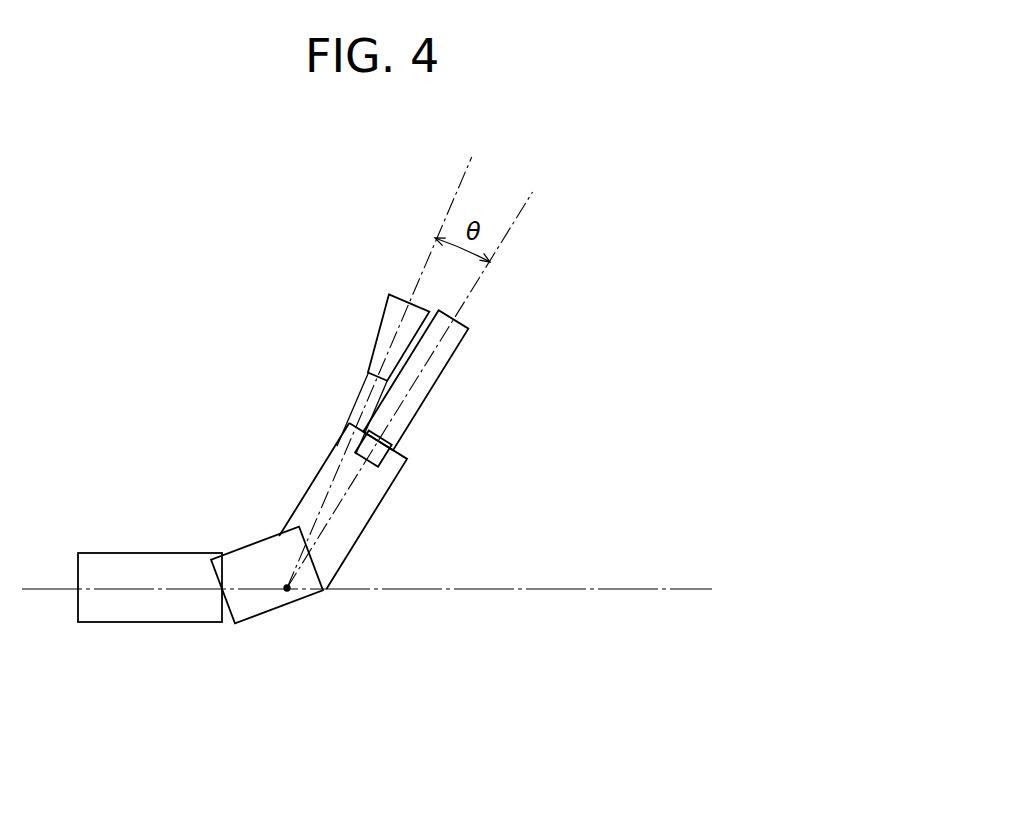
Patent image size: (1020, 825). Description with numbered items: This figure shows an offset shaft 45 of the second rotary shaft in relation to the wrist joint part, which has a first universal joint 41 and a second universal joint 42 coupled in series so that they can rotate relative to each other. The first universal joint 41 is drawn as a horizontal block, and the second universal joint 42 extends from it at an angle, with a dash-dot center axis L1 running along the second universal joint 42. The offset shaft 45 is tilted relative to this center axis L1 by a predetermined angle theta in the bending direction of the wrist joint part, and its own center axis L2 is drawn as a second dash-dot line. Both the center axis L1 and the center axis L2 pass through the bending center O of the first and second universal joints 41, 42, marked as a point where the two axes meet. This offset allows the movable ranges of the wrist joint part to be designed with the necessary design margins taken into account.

The first universal joint 41 is at (150, 617).
The second universal joint 42 is at (367, 503).
The offset shaft 45 is at (377, 335).
The bending center O is at (290, 594).
The center axis of the second universal joint L1 is at (513, 227).
The center axis of the offset shaft L2 is at (460, 183).